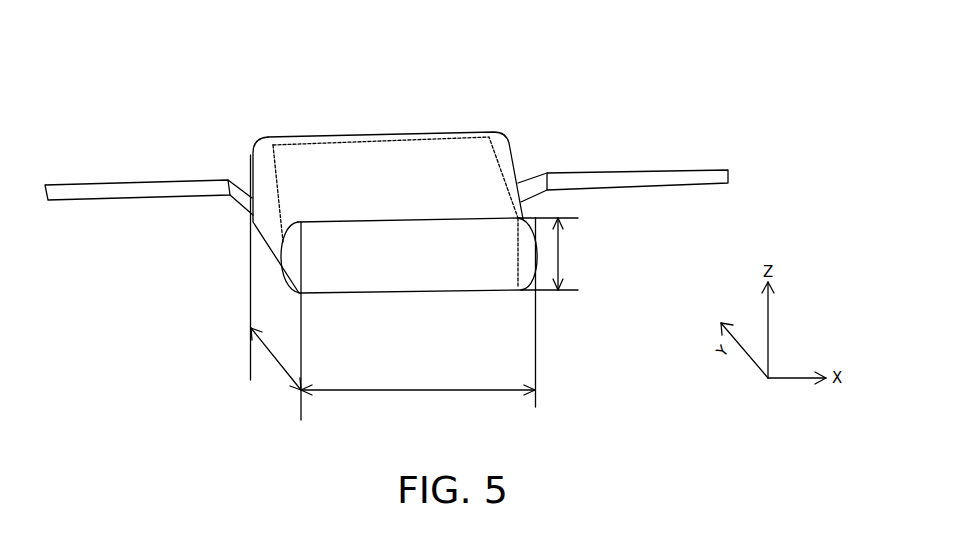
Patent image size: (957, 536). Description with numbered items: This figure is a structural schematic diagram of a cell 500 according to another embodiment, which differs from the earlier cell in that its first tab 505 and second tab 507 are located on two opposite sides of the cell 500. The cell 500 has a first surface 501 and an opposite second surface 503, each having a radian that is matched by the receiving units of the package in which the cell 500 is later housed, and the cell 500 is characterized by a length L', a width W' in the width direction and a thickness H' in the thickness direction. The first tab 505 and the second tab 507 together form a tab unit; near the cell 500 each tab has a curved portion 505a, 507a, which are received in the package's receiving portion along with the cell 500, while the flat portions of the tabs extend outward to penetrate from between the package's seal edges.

The cell 500 is at (409, 48).
The first surface 501 is at (485, 291).
The second surface 503 is at (465, 152).
The first tab 505 is at (630, 188).
The curved portion 505a is at (537, 178).
The second tab 507 is at (132, 199).
The curved portion 507a is at (237, 180).